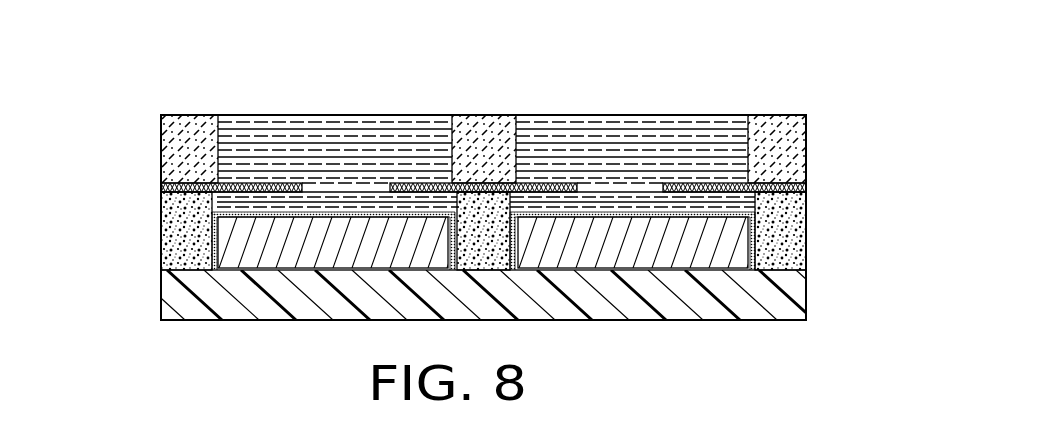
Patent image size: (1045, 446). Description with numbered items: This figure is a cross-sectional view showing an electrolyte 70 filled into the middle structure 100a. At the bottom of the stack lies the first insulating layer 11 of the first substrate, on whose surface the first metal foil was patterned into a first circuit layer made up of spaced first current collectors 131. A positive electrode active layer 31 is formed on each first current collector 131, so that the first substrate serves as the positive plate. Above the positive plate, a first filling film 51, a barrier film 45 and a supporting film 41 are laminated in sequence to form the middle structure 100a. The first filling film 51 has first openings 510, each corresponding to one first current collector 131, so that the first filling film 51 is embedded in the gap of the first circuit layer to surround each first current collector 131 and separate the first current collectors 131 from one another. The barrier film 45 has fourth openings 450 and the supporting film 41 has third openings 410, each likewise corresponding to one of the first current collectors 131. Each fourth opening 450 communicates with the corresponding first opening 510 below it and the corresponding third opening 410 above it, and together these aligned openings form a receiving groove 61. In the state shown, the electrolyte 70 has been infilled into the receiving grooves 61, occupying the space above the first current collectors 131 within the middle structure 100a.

The middle structure 100a is at (148, 85).
The first insulating layer 11 is at (777, 297).
The first current collector 131 is at (723, 242).
The positive electrode active layer 31 is at (213, 247).
The electrolyte 70 is at (693, 142).
The supporting film 41 is at (793, 147).
The barrier film 45 is at (797, 184).
The first filling film 51 is at (795, 225).
The receiving groove 61 is at (449, 140).
The third opening 410 is at (450, 163).
The fourth opening 450 is at (388, 183).
The first opening 510 is at (455, 202).